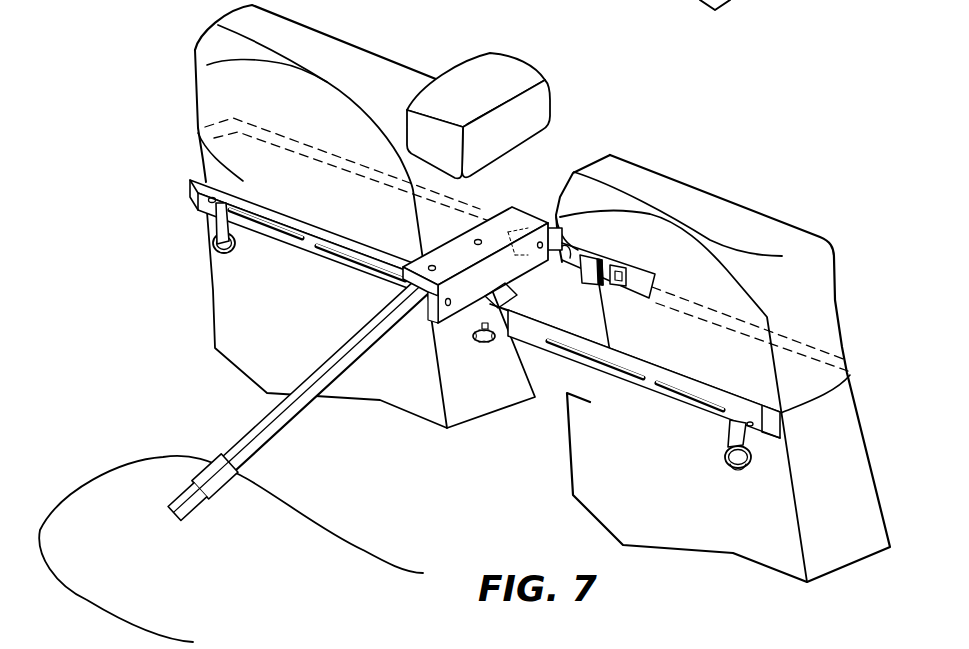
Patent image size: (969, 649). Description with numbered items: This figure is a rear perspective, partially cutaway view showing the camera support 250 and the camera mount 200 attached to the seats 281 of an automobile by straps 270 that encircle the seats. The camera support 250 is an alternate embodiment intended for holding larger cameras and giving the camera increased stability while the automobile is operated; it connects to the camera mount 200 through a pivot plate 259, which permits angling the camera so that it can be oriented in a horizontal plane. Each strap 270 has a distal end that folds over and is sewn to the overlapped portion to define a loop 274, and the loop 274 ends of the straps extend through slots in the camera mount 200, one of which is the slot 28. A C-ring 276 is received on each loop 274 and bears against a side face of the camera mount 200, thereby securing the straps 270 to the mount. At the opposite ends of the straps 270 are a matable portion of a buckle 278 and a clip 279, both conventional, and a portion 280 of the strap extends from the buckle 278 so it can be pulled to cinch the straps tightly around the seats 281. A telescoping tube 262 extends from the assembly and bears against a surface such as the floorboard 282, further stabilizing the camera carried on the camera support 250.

The slot 28 is at (744, 428).
The camera mount 200 is at (636, 386).
The camera support 250 is at (510, 222).
The pivot plate 259 is at (497, 309).
The telescoping tube 262 is at (265, 422).
The strap 270 is at (222, 224).
The loop 274 is at (736, 468).
The C-ring 276 is at (217, 246).
The buckle 278 is at (588, 288).
The clip 279 is at (632, 264).
The portion of the strap 280 is at (560, 250).
The seat 281 is at (283, 336).
The floorboard 282 is at (138, 566).